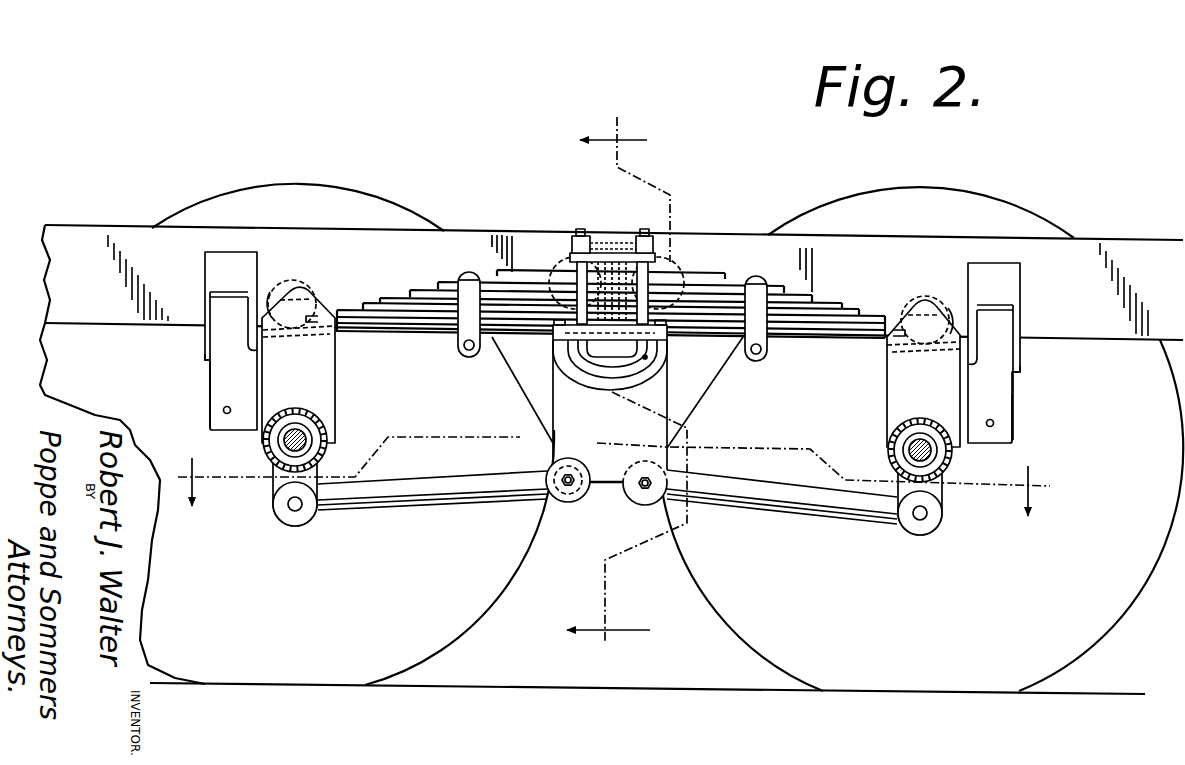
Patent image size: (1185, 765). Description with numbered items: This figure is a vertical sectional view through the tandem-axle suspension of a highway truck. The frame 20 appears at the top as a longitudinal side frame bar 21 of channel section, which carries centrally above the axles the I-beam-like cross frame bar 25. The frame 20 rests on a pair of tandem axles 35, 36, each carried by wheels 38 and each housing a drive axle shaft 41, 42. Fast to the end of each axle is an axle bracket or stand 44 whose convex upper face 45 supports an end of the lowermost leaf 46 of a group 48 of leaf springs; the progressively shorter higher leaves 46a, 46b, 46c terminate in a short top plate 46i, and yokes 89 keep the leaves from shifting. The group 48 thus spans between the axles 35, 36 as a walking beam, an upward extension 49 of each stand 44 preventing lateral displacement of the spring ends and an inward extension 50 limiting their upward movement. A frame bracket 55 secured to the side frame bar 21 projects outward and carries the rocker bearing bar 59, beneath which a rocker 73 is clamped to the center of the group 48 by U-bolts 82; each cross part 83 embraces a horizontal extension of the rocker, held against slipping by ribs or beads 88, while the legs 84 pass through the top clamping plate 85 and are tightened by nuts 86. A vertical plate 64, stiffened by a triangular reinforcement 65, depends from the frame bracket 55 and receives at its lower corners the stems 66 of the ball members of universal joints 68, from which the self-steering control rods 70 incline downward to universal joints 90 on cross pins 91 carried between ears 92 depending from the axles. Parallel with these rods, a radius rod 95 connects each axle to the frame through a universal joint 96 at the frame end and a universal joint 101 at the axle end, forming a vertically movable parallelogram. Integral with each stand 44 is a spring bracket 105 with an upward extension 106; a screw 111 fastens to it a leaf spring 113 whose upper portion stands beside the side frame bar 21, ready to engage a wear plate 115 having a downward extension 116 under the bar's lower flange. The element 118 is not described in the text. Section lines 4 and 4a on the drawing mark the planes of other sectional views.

The frame 20 is at (1116, 238).
The main longitudinal side frame bar 21 is at (76, 227).
The cross frame bar 25 is at (573, 232).
The tandem axle 35 is at (329, 452).
The tandem axle 36 is at (954, 469).
The wheel 38 is at (468, 632).
The drive axle shaft 41 is at (288, 447).
The drive axle shaft 42 is at (915, 456).
The axle bracket or stand 44 is at (337, 417).
The upper face 45 is at (328, 351).
The lowermost leaf 46 is at (352, 333).
The leaf 46a is at (395, 323).
The leaf 46b is at (356, 303).
The leaf 46c is at (382, 297).
The top plate 46i is at (542, 265).
The group of main leaf springs 48 is at (442, 280).
The upward extension 49 is at (276, 315).
The inward extension 50 is at (300, 290).
The frame bracket 55 is at (562, 380).
The rocker bearing bar 59 is at (558, 341).
The vertical plate 64 is at (610, 411).
The triangular reinforcement 65 is at (617, 392).
The stem 66 is at (643, 479).
The universal joint 68 is at (568, 457).
The self-steering control link 70 is at (478, 505).
The rocker 73 is at (650, 357).
The U-bolt 82 is at (586, 236).
The cross part 83 is at (632, 368).
The upstanding leg 84 is at (660, 272).
The top clamping plate 85 is at (626, 252).
The nut 86 is at (655, 243).
The rib or bead 88 is at (597, 379).
The yoke 89 is at (613, 327).
The universal joint 90 is at (287, 530).
The cross pin 91 is at (290, 509).
The ear 92 is at (303, 515).
The radius rod 95 is at (340, 292).
The universal joint 96 is at (565, 272).
The universal joint 101 is at (318, 283).
The spring bracket 105 is at (208, 408).
The upward extension 106 is at (213, 345).
The screw 111 is at (225, 413).
The leaf spring 113 is at (208, 296).
The wear plate 115 is at (205, 268).
The downward extension 116 is at (1020, 373).
The shoulder 118 is at (205, 360).
The section line 4- 4 is at (627, 380).
The section line 4a- 4a is at (614, 496).